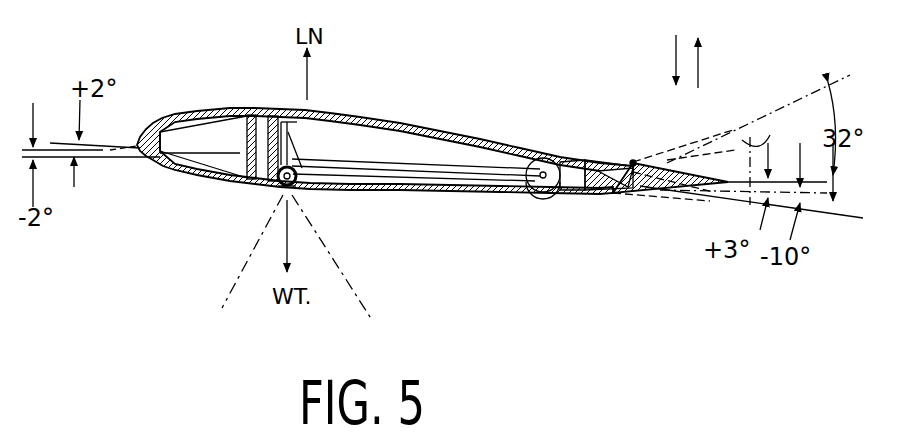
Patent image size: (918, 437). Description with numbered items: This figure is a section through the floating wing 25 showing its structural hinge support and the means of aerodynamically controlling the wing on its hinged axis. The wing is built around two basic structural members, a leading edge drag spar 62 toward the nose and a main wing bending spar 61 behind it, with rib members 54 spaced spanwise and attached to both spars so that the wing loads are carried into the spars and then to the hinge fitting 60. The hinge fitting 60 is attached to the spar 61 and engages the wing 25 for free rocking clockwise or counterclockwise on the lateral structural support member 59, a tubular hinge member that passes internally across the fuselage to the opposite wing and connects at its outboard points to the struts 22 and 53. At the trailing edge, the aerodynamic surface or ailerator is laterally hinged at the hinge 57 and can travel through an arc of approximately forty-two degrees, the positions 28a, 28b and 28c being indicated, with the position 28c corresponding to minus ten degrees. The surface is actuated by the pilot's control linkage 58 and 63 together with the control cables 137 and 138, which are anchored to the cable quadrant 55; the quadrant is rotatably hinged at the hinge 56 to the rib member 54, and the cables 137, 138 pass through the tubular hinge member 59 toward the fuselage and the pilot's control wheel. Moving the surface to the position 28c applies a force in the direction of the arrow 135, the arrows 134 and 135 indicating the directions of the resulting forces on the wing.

The strut 22 is at (245, 264).
The wing 25 is at (383, 122).
The ailerator position 28a is at (668, 162).
The ailerator position 28b is at (748, 142).
The ailerator minus ten degree position 28c is at (714, 196).
The strut 53 is at (352, 285).
The rib member 54 is at (530, 159).
The cable quadrant 55 is at (566, 166).
The quadrant hinge 56 is at (547, 174).
The ailerator hinge 57 is at (634, 159).
The control linkage 58 is at (619, 198).
The lateral structural support member 59 is at (277, 191).
The hinge fitting 60 is at (297, 122).
The main wing bending spar 61 is at (272, 115).
The leading edge drag spar 62 is at (147, 138).
The control linkage 63 is at (535, 192).
The force arrow 134 is at (673, 58).
The force arrow 135 is at (698, 66).
The control cable 137 is at (447, 162).
The control cable 138 is at (410, 183).